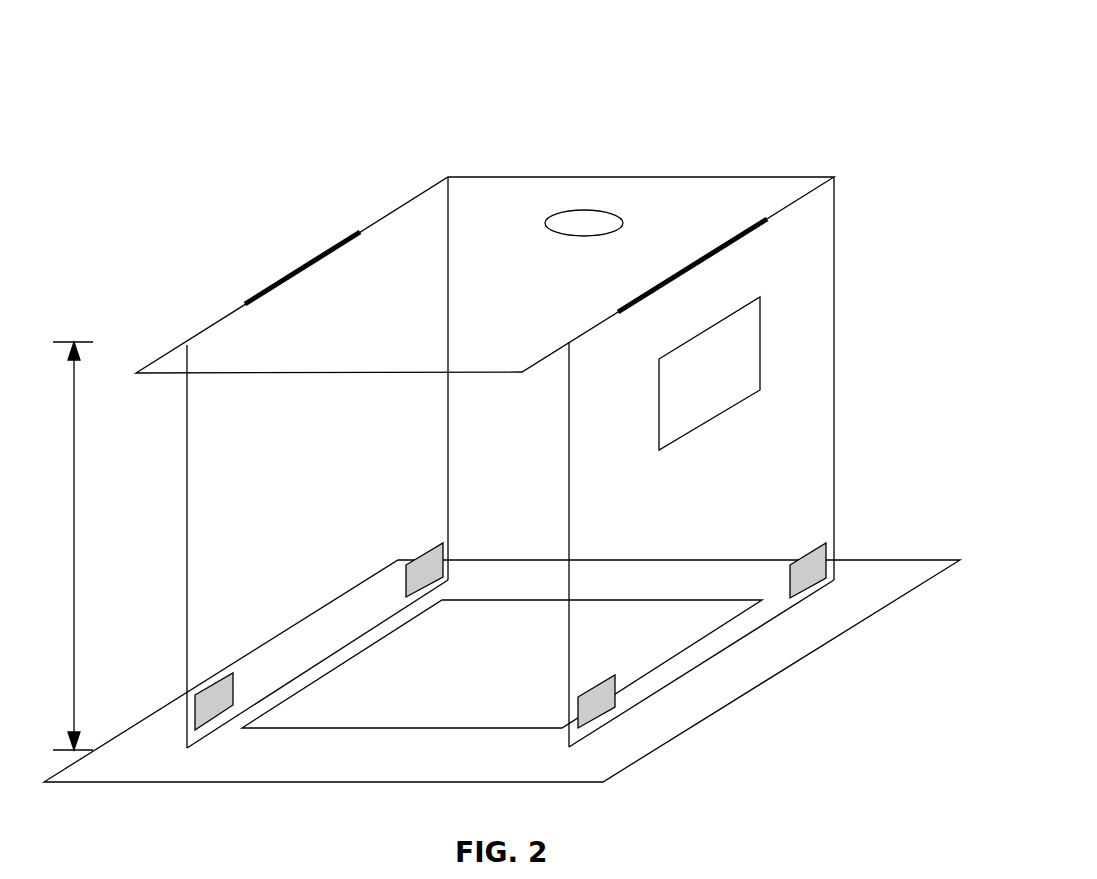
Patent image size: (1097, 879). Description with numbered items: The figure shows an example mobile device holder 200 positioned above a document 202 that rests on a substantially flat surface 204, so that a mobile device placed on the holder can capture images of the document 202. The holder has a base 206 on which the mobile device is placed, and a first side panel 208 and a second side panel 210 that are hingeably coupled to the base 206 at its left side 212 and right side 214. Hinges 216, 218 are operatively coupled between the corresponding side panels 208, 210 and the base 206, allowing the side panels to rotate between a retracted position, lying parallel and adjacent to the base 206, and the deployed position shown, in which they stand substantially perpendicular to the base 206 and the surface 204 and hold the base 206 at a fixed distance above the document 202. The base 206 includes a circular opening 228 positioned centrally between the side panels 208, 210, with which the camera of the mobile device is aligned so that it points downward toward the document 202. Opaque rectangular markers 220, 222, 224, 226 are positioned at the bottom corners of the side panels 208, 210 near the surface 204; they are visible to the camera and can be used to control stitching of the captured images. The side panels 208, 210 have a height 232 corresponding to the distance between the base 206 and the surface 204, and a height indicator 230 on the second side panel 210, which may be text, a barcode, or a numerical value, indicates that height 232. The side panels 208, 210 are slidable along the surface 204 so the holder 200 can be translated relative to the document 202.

The mobile device holder 200 is at (368, 47).
The document 202 is at (405, 730).
The surface 204 is at (210, 783).
The base 206 is at (725, 177).
The first side panel 208 is at (187, 520).
The second side panel 210 is at (837, 437).
The left side 212 is at (270, 152).
The right side 214 is at (857, 128).
The hinge 216 is at (290, 273).
The hinge 218 is at (753, 226).
The marker 220 is at (207, 687).
The marker 222 is at (423, 565).
The marker 224 is at (600, 712).
The marker 226 is at (816, 577).
The opening 228 is at (584, 210).
The height indicator 230 is at (712, 418).
The height 232 is at (76, 382).